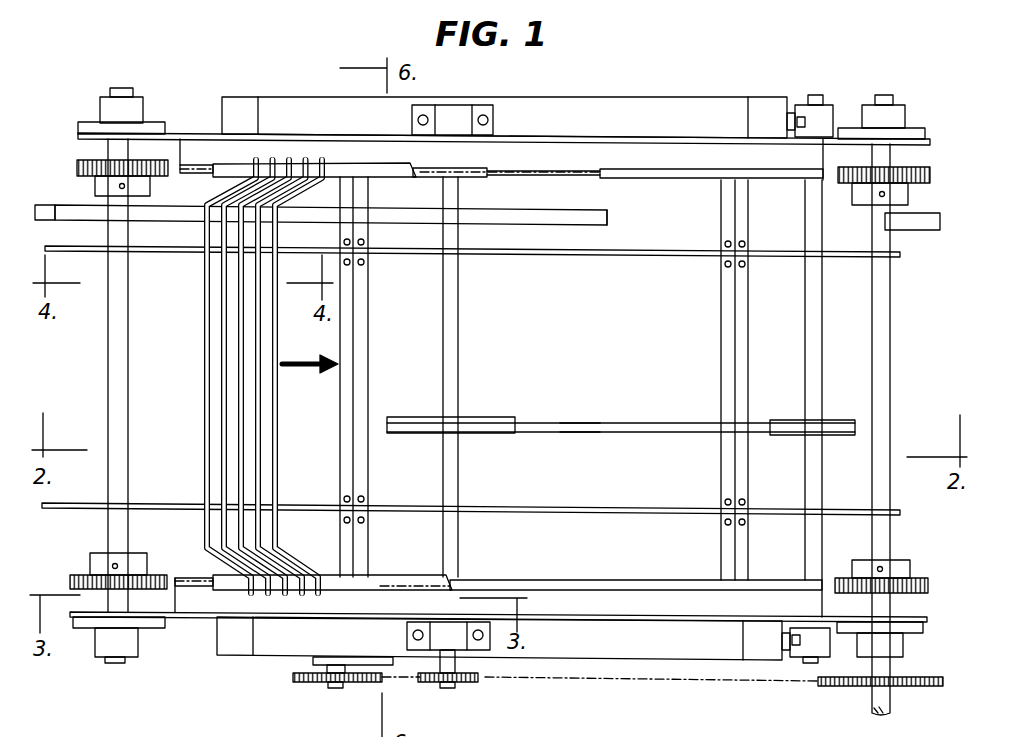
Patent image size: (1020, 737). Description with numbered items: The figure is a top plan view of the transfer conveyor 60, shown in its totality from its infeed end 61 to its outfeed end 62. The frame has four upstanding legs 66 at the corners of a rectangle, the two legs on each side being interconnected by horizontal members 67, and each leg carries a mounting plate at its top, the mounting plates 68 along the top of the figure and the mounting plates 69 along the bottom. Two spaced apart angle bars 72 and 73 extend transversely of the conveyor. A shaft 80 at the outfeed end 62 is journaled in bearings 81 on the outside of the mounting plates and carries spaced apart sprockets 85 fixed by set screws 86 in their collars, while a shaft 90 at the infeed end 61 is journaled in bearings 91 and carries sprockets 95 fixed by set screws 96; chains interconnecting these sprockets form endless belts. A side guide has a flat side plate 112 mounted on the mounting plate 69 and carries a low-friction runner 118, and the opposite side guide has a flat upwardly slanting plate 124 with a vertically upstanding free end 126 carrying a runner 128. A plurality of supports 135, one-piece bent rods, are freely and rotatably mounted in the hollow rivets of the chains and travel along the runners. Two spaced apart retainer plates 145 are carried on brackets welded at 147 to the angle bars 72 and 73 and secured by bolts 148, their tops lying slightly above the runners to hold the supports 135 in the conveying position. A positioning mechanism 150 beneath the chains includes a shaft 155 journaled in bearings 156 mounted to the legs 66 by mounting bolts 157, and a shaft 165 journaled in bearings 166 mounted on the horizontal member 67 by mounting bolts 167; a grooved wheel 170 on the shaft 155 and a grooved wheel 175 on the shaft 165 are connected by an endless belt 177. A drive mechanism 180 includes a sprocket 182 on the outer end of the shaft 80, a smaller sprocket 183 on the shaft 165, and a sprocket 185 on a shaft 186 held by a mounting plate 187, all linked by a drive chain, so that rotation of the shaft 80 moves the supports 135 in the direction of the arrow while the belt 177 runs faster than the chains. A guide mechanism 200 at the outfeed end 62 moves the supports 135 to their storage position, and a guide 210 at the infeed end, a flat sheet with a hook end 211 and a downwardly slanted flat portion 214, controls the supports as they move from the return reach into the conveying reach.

The transfer conveyor 60 is at (746, 78).
The infeed end 61 is at (46, 143).
The outfeed end 62 is at (945, 118).
The upstanding legs 66 is at (770, 108).
The horizontal members 67 is at (596, 102).
The mounting plates 68 is at (178, 133).
The mounting plates 69 is at (925, 620).
The angle bar 72 is at (365, 346).
The angle bar 73 is at (742, 360).
The shaft 80 is at (890, 352).
The bearings 81 is at (895, 108).
The sprockets 85 is at (930, 172).
The set screws 86 is at (880, 568).
The shaft 90 is at (127, 414).
The bearings 91 is at (138, 112).
The sprockets 95 is at (80, 172).
The set screws 96 is at (118, 564).
The flat side plate 112 is at (650, 613).
The runner 118 is at (655, 580).
The flat upwardly slanting plate 124 is at (661, 167).
The vertically upstanding free end 126 is at (535, 173).
The runner 128 is at (613, 140).
The supports 135 is at (284, 441).
The retainer plates 145 is at (660, 256).
The welds 147 is at (362, 516).
The bolts 148 is at (745, 517).
The positioning mechanism 150 is at (574, 408).
The shaft 155 is at (817, 352).
The bearings 156 is at (828, 106).
The mounting bolts 157 is at (795, 659).
The shaft 165 is at (458, 337).
The bearings 166 is at (463, 110).
The mounting bolts 167 is at (491, 120).
The grooved wheel 170 is at (830, 418).
The grooved wheel 175 is at (502, 415).
The endless belt 177 is at (618, 422).
The drive mechanism 180 is at (500, 690).
The sprocket 182 is at (848, 689).
The sprocket 183 is at (432, 686).
The sprocket 185 is at (293, 683).
The shaft 186 is at (335, 690).
The mounting plate 187 is at (318, 660).
The guide mechanism 200 is at (931, 230).
The guide 210 is at (502, 208).
The hook end 211 is at (50, 218).
The downwardly slanted flat portion 214 is at (606, 224).